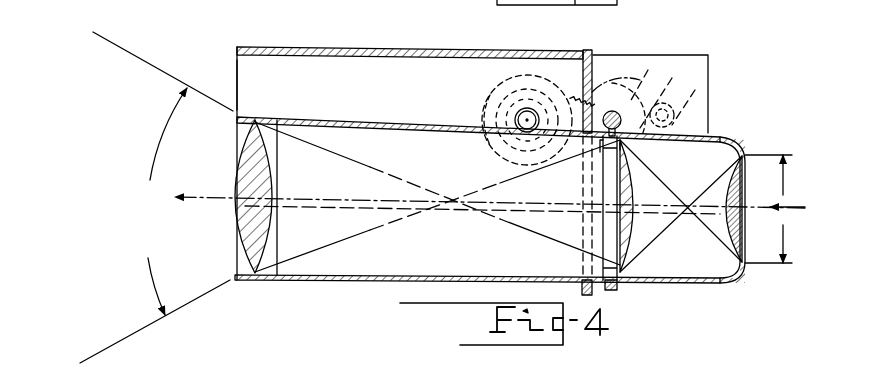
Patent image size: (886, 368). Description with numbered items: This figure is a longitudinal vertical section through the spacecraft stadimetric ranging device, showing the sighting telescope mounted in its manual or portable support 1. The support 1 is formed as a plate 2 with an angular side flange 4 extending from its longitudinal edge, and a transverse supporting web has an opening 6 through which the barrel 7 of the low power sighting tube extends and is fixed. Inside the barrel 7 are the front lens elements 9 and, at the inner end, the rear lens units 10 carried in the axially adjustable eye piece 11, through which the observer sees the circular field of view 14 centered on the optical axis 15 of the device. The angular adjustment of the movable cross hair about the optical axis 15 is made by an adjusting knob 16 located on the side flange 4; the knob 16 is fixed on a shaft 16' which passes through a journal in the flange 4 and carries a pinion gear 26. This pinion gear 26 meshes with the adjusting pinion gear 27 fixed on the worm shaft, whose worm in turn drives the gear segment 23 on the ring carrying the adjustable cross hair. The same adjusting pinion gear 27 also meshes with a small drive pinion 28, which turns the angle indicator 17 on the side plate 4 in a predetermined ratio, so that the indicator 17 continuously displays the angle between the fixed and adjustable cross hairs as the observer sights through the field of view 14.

The support 1 is at (442, 47).
The plate 2 is at (343, 68).
The side flange 4 is at (250, 68).
The opening 6 is at (598, 292).
The barrel 7 is at (318, 282).
The front lens elements 9 is at (245, 237).
The rear lens units 10 is at (722, 236).
The eye piece 11 is at (720, 120).
The field of view 14 is at (783, 232).
The optical axis 15 is at (218, 196).
The adjusting knob 16 is at (538, 94).
The shaft 16' is at (502, 99).
The angle indicator 17 is at (706, 54).
The gear segment 23 is at (592, 140).
The pinion gear 26 is at (478, 108).
The adjusting pinion gear 27 is at (640, 72).
The drive pinion 28 is at (688, 128).